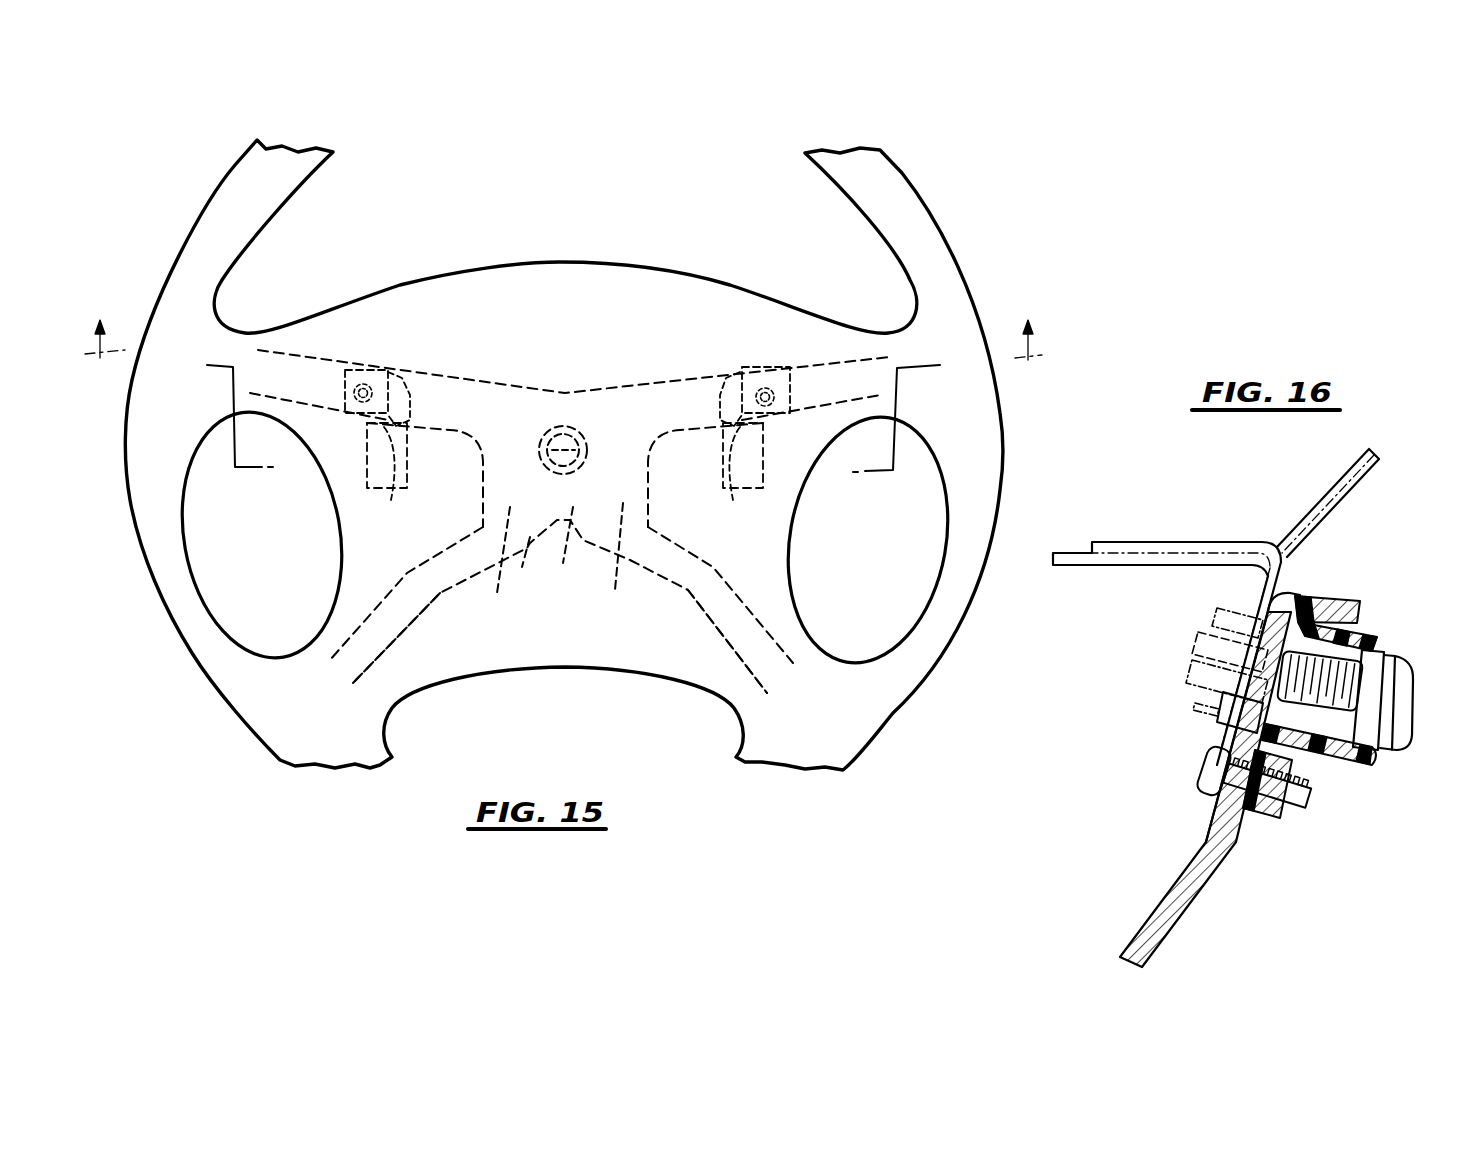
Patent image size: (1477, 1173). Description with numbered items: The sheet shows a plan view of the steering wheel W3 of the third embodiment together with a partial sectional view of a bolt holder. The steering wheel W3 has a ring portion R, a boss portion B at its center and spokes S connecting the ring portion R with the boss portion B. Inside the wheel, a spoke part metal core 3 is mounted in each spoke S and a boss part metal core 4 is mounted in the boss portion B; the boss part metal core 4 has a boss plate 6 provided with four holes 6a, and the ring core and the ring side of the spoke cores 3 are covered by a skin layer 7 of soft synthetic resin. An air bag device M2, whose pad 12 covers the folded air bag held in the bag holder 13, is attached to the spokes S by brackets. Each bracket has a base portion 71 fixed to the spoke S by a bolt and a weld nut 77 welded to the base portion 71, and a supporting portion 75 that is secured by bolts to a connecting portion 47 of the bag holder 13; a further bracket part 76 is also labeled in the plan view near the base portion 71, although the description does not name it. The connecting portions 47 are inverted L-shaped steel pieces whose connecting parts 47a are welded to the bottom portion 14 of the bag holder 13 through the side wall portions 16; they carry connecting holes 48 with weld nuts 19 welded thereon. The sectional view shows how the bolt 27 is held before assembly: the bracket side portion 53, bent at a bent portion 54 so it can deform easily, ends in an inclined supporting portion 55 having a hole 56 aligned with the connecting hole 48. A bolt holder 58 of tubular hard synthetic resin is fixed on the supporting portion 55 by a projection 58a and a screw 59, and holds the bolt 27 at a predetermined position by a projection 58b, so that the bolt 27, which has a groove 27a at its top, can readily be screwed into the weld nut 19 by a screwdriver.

In FIG. 15, the steering wheel W3 is at (946, 134).
In FIG. 15, the ring portion R is at (893, 180).
In FIG. 15, the pad 12 is at (492, 272).
In FIG. 15, the air bag device M2 is at (562, 252).
In FIG. 15, the spoke S is at (223, 432).
In FIG. 15, the bottom portion 14 is at (566, 396).
In FIG. 16, the bottom portion 14 is at (1164, 556).
In FIG. 16, the bag holder 13 is at (1098, 562).
In FIG. 15, the spoke part metal core 3 is at (311, 385).
In FIG. 15, the skin layer 7 is at (420, 452).
In FIG. 15, the base portion 71 is at (360, 384).
In FIG. 15, the weld nut 77 is at (384, 392).
In FIG. 15, the bracket 76 is at (368, 463).
In FIG. 15, the supporting portion 75 is at (394, 503).
In FIG. 15, the boss portion B is at (582, 697).
In FIG. 15, the holes 6a is at (497, 596).
In FIG. 15, the boss part metal core 4 is at (521, 574).
In FIG. 15, the boss plate 6 is at (563, 566).
In FIG. 16, the side wall portion 16 is at (1322, 498).
In FIG. 16, the connecting part 47a is at (1145, 545).
In FIG. 16, the connecting portion 47 is at (1255, 590).
In FIG. 16, the connecting hole 48 is at (1214, 621).
In FIG. 16, the hole 56 is at (1205, 641).
In FIG. 16, the weld nut 19 is at (1195, 706).
In FIG. 16, the supporting portion 55 is at (1228, 820).
In FIG. 16, the bent portion 54 is at (1215, 860).
In FIG. 16, the side portion 53 is at (1157, 935).
In FIG. 16, the screw 59 is at (1202, 795).
In FIG. 16, the bolt holder 58 is at (1320, 776).
In FIG. 16, the projection 58b is at (1350, 773).
In FIG. 16, the projection 58a is at (1305, 600).
In FIG. 16, the bolt 27 is at (1192, 666).
In FIG. 16, the groove 27a is at (1392, 682).